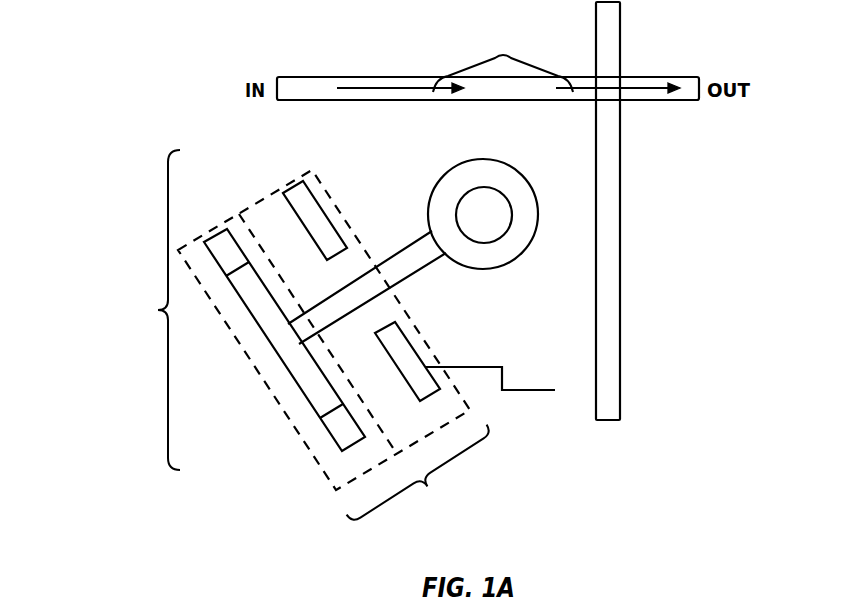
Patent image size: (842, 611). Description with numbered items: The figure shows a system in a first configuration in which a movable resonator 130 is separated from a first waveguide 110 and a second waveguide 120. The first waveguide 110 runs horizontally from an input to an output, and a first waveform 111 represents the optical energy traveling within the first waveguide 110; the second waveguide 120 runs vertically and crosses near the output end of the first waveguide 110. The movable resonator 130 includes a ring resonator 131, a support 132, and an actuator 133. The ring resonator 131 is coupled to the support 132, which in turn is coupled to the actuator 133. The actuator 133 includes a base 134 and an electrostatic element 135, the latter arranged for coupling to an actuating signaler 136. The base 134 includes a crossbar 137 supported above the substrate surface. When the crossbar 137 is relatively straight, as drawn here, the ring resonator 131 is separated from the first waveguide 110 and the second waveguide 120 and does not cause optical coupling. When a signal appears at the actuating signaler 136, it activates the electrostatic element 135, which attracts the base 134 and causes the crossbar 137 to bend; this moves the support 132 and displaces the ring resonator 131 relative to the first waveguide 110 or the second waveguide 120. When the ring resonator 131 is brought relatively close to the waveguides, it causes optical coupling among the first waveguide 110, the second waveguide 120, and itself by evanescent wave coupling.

The first waveguide 110 is at (310, 86).
The first waveform 111 is at (503, 57).
The second waveguide 120 is at (612, 253).
The movable resonator 130 is at (347, 337).
The ring resonator 131 is at (503, 257).
The support 132 is at (405, 258).
The actuator 133 is at (418, 474).
The base 134 is at (337, 488).
The electrostatic element 135 is at (323, 220).
The actuating signaler 136 is at (515, 388).
The crossbar 137 is at (305, 370).